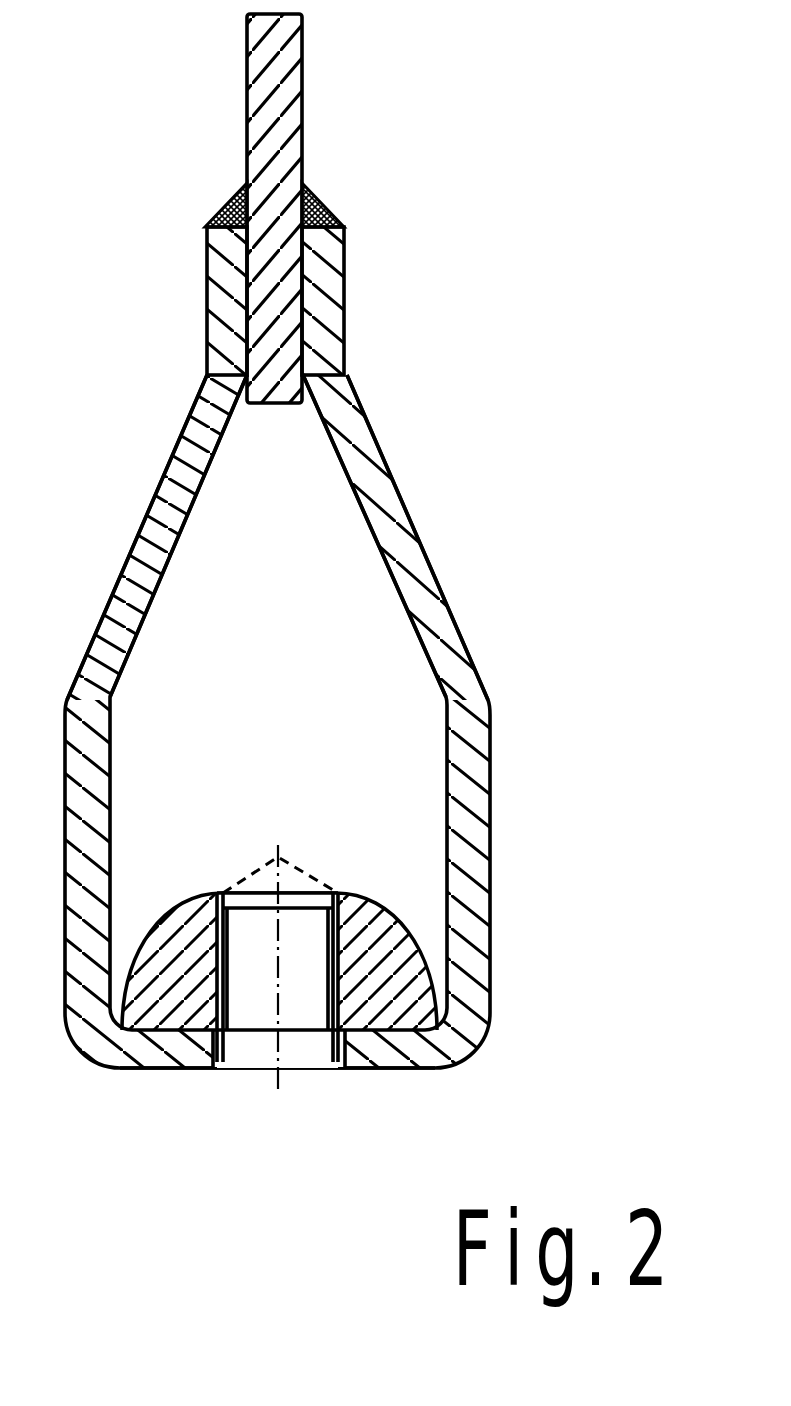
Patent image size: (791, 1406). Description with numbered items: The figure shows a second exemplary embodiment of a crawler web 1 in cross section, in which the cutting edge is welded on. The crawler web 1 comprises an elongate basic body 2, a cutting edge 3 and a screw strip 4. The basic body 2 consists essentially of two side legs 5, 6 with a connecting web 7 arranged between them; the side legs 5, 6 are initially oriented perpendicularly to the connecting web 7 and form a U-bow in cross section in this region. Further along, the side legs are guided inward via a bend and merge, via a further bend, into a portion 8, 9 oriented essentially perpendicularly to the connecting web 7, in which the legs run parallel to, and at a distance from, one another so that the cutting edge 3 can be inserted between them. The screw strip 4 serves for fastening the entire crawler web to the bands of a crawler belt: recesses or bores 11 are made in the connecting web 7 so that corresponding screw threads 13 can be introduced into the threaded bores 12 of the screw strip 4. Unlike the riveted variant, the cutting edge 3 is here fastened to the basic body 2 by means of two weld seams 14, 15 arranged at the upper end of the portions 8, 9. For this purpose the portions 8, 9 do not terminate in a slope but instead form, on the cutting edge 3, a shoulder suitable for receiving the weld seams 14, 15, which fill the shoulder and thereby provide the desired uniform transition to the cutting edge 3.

The crawler web 1 is at (465, 445).
The basic body 2 is at (545, 817).
The cutting edge 3 is at (288, 72).
The screw strip 4 is at (413, 978).
The side leg 5 is at (445, 630).
The side leg 6 is at (118, 610).
The connecting web 7 is at (390, 1057).
The portion 8 is at (325, 298).
The portion 9 is at (218, 300).
The bore 11 is at (238, 1053).
The threaded bore 12 is at (338, 945).
The screw thread 13 is at (263, 870).
The weld seam 14 is at (323, 200).
The weld seam 15 is at (228, 204).